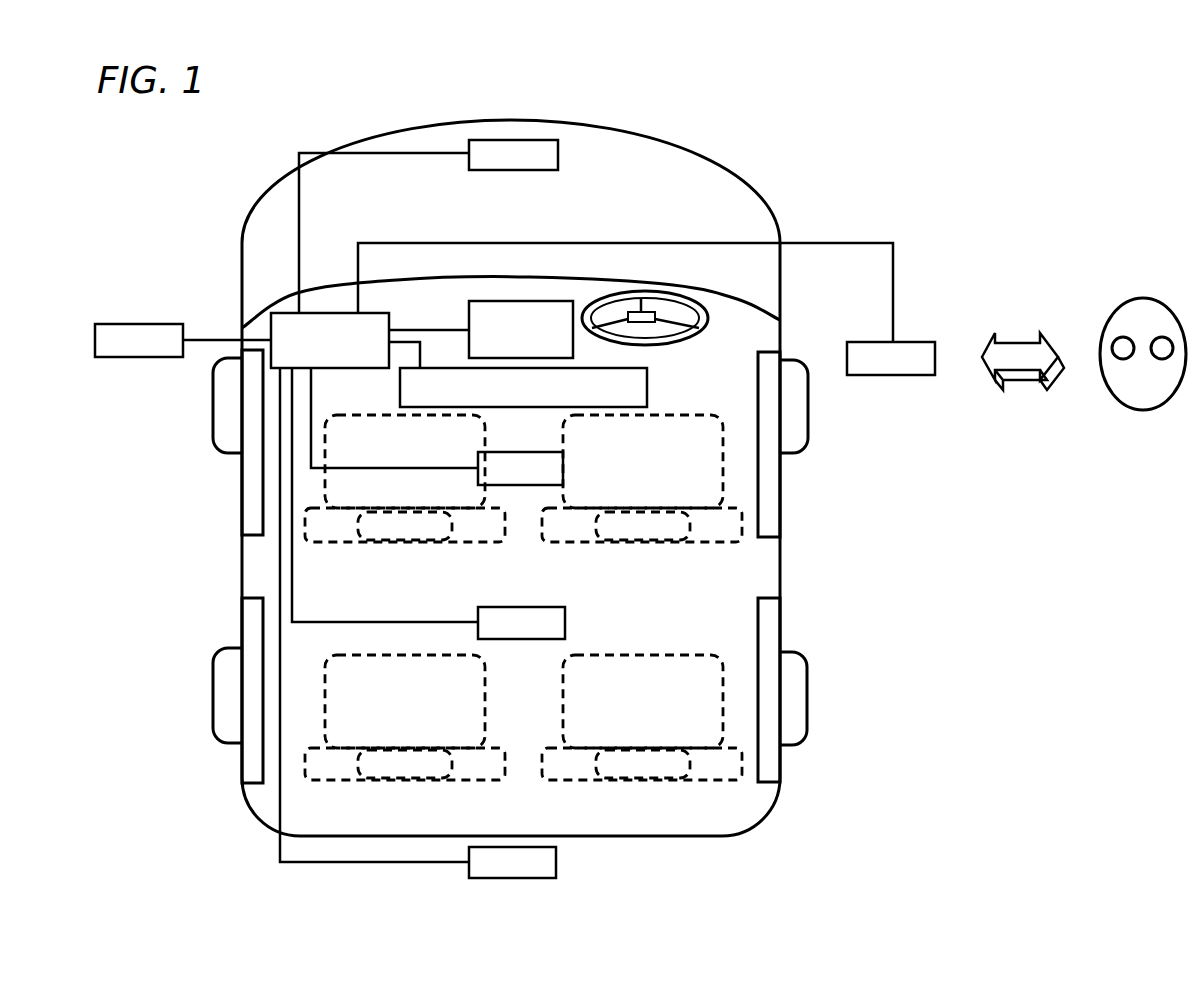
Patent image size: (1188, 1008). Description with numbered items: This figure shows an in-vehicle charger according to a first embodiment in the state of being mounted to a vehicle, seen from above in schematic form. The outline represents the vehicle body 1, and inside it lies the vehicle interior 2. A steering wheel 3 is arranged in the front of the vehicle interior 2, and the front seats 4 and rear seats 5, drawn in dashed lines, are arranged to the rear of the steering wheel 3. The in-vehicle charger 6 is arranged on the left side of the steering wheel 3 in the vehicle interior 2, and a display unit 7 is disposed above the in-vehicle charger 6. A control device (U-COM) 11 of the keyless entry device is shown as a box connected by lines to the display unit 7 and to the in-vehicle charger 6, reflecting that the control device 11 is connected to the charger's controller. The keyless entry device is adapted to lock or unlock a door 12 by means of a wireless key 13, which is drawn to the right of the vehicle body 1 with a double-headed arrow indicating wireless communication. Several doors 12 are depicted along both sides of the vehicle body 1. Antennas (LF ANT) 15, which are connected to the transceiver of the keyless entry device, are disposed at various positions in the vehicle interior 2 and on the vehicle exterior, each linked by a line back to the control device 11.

The vehicle body 1 is at (762, 203).
The vehicle interior 2 is at (745, 270).
The steering wheel 3 is at (705, 310).
The front seats 4 is at (308, 523).
The rear seats 5 is at (307, 762).
The in-vehicle charger 6 is at (650, 402).
The display unit 7 is at (547, 298).
The control device (U-COM) 11 is at (292, 322).
The door 12 is at (253, 378).
The wireless key 13 is at (1143, 410).
The antennas (LF ANT) 15 is at (492, 140).